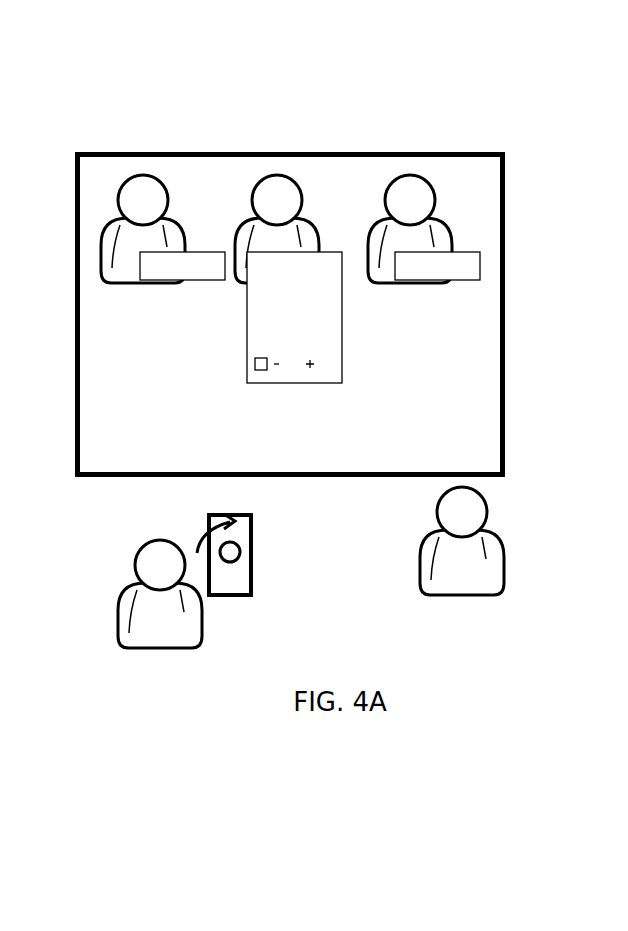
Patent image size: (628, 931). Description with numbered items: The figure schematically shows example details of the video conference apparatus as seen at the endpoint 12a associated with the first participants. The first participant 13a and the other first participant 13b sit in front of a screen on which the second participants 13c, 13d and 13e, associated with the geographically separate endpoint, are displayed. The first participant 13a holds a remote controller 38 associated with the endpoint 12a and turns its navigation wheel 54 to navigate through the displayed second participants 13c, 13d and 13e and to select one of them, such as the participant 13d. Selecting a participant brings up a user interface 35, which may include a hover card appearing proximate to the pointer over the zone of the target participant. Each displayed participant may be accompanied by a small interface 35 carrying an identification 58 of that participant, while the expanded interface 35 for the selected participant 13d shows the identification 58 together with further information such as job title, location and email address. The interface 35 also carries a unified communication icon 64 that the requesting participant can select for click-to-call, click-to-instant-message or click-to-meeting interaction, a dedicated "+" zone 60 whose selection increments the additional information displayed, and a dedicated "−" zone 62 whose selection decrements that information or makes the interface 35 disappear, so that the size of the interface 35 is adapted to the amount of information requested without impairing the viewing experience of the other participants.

The endpoint 12a is at (225, 178).
The first participant 13a is at (122, 608).
The first participant 13b is at (498, 585).
The second participant 13c is at (407, 188).
The second participant 13d is at (278, 190).
The second participant 13e is at (138, 190).
The user interface 35 is at (202, 252).
The identification 58 is at (175, 273).
The "+" zone 60 is at (314, 368).
The "−" zone 62 is at (274, 370).
The unified communication icon 64 is at (254, 364).
The remote controller 38 is at (254, 575).
The navigation wheel 54 is at (241, 548).